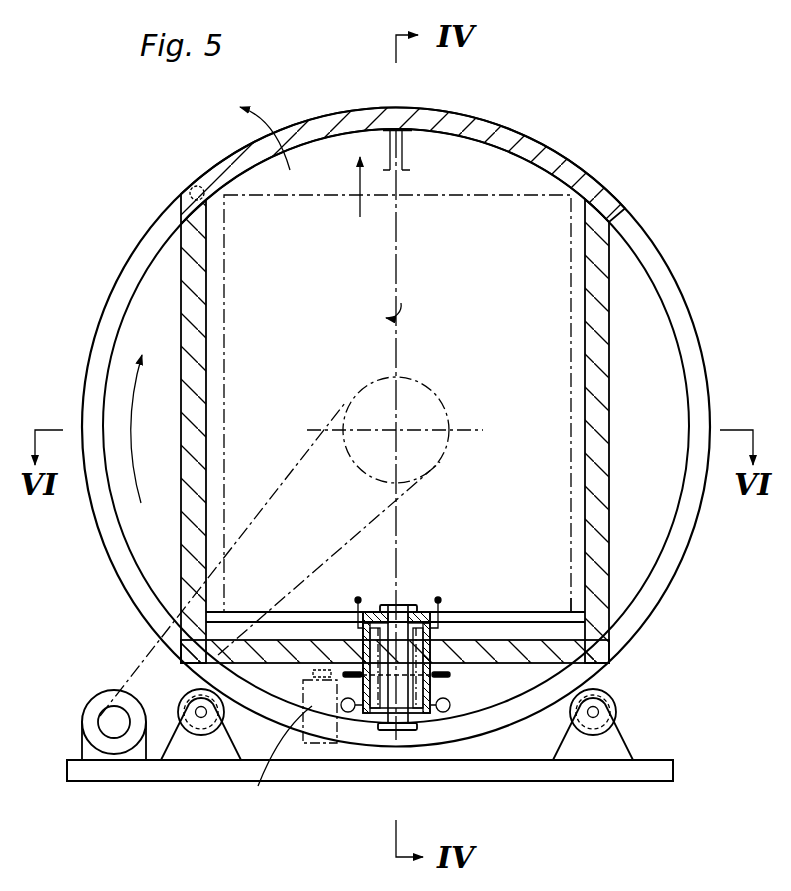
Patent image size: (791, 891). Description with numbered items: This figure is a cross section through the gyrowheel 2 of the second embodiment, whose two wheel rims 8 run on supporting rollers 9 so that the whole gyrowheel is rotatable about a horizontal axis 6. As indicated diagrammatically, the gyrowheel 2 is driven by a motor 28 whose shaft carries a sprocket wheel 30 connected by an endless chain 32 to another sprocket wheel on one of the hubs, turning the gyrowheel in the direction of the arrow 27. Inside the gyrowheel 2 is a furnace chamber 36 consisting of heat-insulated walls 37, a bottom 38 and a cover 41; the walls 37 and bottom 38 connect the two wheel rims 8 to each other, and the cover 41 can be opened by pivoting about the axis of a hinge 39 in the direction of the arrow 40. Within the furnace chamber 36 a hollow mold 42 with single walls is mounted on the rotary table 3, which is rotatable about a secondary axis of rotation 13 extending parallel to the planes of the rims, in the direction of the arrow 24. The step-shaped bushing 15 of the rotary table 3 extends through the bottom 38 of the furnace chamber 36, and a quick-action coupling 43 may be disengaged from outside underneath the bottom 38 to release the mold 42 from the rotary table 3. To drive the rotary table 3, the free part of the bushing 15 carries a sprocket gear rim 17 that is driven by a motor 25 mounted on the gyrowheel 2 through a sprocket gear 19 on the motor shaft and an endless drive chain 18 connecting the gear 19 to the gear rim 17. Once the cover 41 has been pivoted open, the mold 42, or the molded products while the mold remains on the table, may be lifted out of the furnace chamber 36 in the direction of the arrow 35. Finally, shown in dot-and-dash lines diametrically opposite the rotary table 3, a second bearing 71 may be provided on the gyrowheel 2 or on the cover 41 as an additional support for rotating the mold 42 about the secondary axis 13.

The gyrowheel 2 is at (632, 180).
The rotary table 3 is at (312, 619).
The horizontal axis 6 is at (401, 431).
The wheel rims 8 is at (652, 263).
The supporting rollers 9 is at (224, 714).
The secondary axis of rotation 13 is at (403, 265).
The step-shaped bushing 15 is at (430, 639).
The sprocket gear rim 17 is at (449, 679).
The endless drive chain 18 is at (336, 734).
The sprocket gear 19 is at (311, 677).
The arrow 24 is at (374, 314).
The motor 25 is at (279, 759).
The arrow 27 is at (151, 414).
The motor 28 is at (90, 708).
The sprocket wheel 30 is at (113, 718).
The endless chain 32 is at (308, 451).
The arrow 35 is at (346, 187).
The furnace chamber 36 is at (461, 167).
The heat-insulated walls 37 is at (608, 381).
The bottom 38 is at (517, 663).
The hinge 39 is at (193, 187).
The arrow 40 is at (265, 128).
The cover 41 is at (520, 143).
The hollow mold 42 is at (276, 227).
The quick-action coupling 43 is at (400, 732).
The second bearing 71 is at (413, 142).